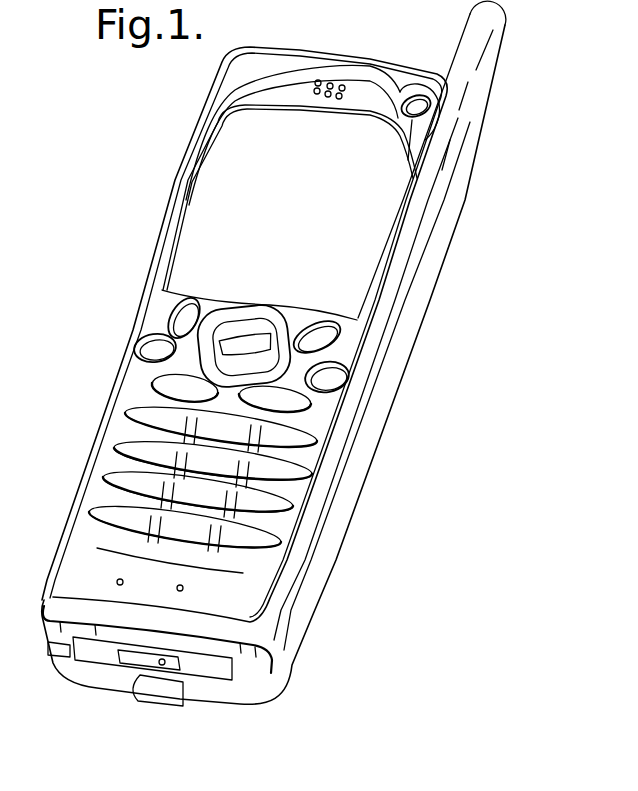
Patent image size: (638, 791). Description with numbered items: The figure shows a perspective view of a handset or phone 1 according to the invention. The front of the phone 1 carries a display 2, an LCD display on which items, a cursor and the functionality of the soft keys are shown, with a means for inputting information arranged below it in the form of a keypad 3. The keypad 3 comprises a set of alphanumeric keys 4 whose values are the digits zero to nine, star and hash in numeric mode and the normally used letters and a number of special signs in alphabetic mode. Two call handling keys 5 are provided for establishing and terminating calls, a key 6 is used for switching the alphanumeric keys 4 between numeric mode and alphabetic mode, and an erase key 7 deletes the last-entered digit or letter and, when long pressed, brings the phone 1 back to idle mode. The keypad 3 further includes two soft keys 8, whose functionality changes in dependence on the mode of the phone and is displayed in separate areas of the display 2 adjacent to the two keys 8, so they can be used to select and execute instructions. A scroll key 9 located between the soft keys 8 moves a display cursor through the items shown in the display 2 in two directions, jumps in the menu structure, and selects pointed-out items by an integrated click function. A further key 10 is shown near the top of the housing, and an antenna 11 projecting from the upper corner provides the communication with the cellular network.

The phone 1 is at (422, 214).
The display 2 is at (392, 153).
The keypad 3 is at (295, 474).
The alphanumeric keys 4 is at (113, 480).
The call handling keys 5 is at (135, 386).
The key 6 is at (335, 380).
The erase key 7 is at (148, 349).
The soft keys 8 is at (178, 316).
The scroll key 9 is at (248, 323).
The power key 10 is at (425, 105).
The antenna 11 is at (473, 42).